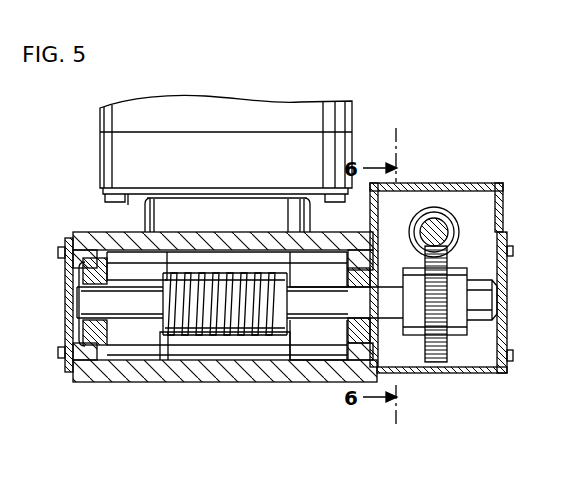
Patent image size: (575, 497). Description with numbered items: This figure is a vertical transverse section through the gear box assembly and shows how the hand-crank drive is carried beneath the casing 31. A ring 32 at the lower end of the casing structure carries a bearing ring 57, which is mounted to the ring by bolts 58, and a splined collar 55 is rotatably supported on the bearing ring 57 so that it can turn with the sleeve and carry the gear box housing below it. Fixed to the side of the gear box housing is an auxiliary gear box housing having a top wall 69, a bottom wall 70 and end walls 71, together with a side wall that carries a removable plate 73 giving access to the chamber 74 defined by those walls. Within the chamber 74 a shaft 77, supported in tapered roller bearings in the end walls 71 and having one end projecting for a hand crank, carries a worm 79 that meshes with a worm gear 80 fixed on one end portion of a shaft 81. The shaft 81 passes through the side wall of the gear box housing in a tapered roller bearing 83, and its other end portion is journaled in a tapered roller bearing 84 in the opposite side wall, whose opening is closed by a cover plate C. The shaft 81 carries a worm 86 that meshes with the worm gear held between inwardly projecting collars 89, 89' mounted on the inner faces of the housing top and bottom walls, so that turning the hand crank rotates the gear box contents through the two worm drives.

The casing 31 is at (300, 110).
The ring 32 is at (197, 142).
The collar 55 is at (282, 220).
The bearing ring 57 is at (225, 207).
The bolts 58 is at (106, 200).
The top wall 69 is at (430, 183).
The bottom wall 70 is at (427, 376).
The end wall 71 is at (505, 203).
The removable plate 73 is at (510, 303).
The chamber 74 is at (460, 197).
The shaft 77 is at (448, 231).
The worm 79 is at (450, 220).
The worm gear 80 is at (448, 350).
The shaft 81 is at (325, 310).
The tapered roller bearing 83 is at (370, 332).
The tapered roller bearing 84 is at (100, 272).
The worm 86 is at (217, 303).
The collar 89 is at (227, 269).
The collar 89' is at (227, 371).
The cover plate C is at (65, 290).